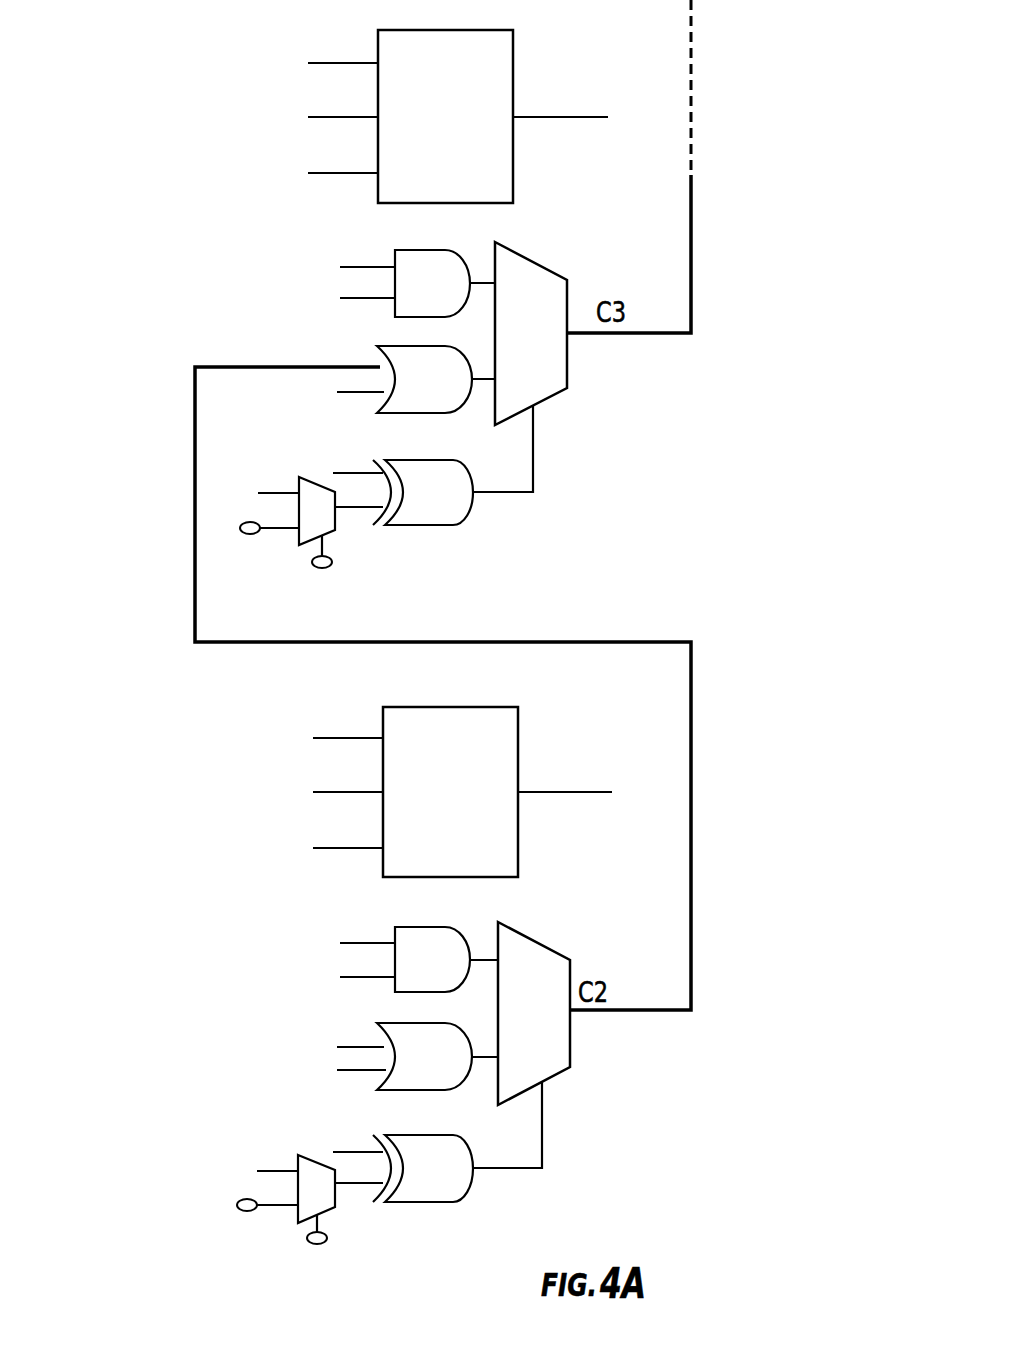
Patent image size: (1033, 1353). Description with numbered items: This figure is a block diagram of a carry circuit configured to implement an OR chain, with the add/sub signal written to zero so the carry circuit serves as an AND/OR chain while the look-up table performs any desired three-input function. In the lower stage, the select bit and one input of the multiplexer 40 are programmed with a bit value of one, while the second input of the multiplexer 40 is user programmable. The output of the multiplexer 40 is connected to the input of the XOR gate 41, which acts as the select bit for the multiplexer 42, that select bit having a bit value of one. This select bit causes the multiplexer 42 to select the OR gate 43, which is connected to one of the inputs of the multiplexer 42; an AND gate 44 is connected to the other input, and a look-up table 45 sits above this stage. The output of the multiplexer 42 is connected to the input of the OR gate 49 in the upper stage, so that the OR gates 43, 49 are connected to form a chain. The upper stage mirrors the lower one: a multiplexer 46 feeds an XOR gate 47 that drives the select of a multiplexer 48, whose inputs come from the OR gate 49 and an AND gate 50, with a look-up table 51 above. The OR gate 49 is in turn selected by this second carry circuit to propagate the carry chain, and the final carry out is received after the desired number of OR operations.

The look-up table 51 is at (458, 116).
The AND gate 50 is at (408, 278).
The OR gate 49 is at (401, 376).
The multiplexer 48 is at (520, 367).
The XOR gate 47 is at (403, 492).
The multiplexer 46 is at (300, 545).
The look-up table 45 is at (462, 791).
The AND gate 44 is at (409, 954).
The OR gate 43 is at (404, 1054).
The multiplexer 42 is at (521, 1045).
The XOR gate 41 is at (403, 1168).
The multiplexer 40 is at (298, 1213).